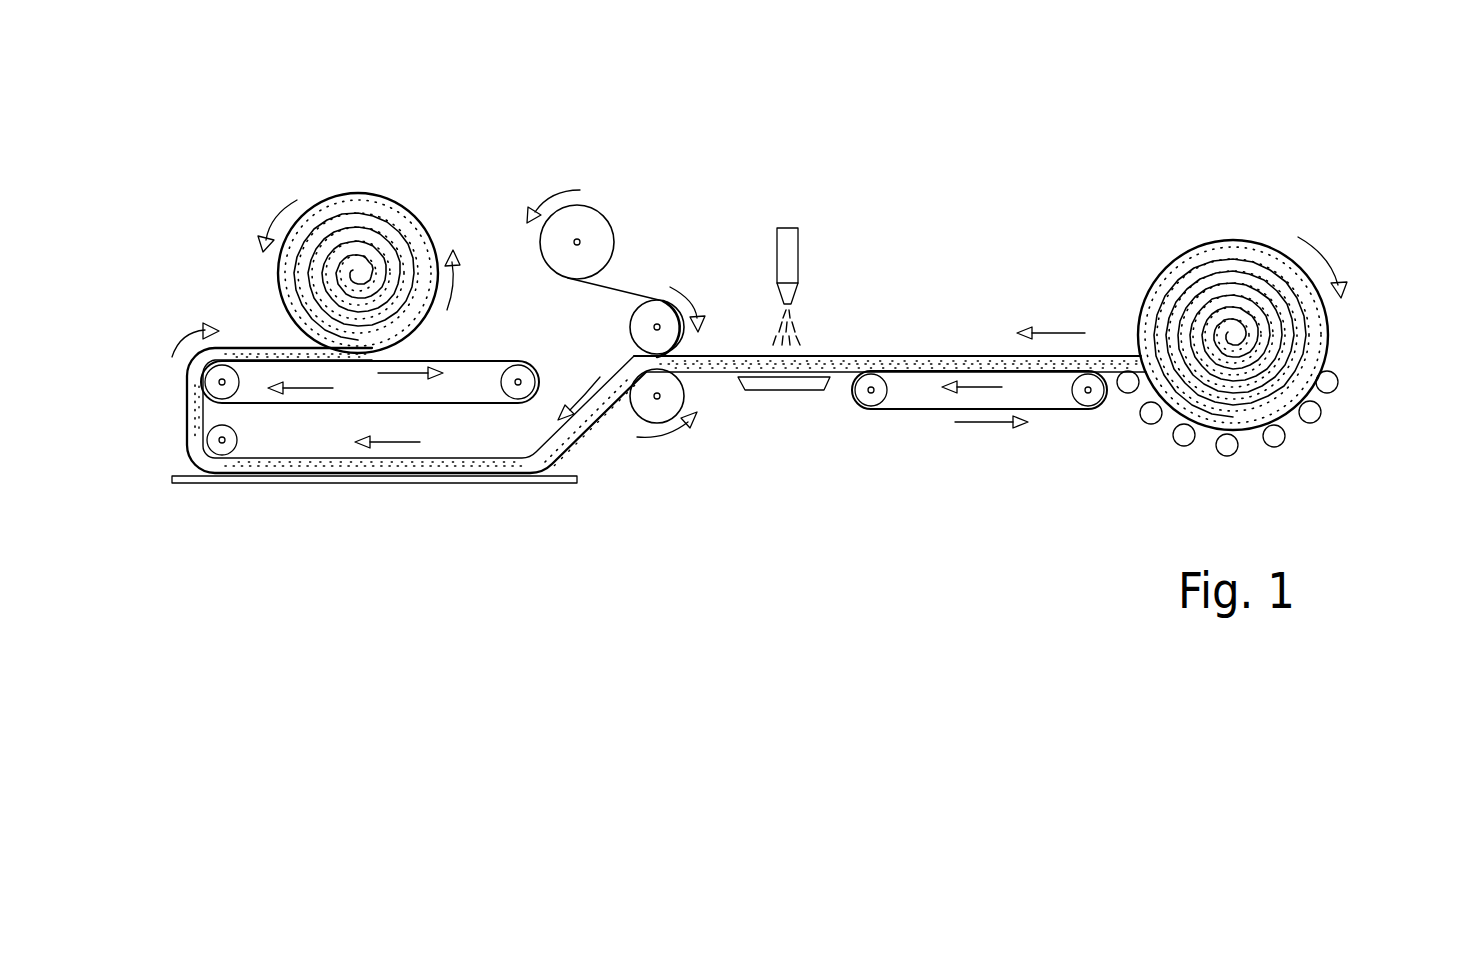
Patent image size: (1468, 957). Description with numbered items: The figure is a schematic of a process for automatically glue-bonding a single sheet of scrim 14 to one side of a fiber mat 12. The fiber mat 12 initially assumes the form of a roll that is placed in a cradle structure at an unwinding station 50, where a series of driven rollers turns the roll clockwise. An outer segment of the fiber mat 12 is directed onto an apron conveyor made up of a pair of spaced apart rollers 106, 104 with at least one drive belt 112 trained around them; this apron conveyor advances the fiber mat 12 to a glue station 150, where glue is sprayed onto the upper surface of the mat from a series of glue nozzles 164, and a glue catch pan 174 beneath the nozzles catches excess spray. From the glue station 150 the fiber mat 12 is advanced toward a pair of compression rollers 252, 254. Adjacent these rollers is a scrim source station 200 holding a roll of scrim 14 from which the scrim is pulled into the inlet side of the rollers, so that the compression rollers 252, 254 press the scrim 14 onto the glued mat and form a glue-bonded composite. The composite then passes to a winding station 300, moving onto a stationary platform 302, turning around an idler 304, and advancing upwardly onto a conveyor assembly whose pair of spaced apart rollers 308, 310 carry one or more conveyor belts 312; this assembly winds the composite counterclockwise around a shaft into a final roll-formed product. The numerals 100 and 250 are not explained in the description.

The fiber mat 12 is at (333, 203).
The scrim 14 is at (417, 212).
The unwinding station 50 is at (1348, 425).
The conveyor 100 is at (933, 523).
The roller 104 is at (865, 404).
The roller 106 is at (1090, 404).
The drive belt 112 is at (1050, 410).
The glue station 150 is at (828, 237).
The glue nozzles 164 is at (800, 292).
The glue catch pan 174 is at (757, 391).
The scrim source station 200 is at (670, 118).
The laminating station 250 is at (725, 248).
The compression roller 252 is at (633, 328).
The compression roller 254 is at (677, 382).
The winding station 300 is at (325, 152).
The stationary platform 302 is at (210, 486).
The idler 304 is at (234, 436).
The roller 308 is at (512, 368).
The roller 310 is at (228, 371).
The conveyor belt 312 is at (403, 404).